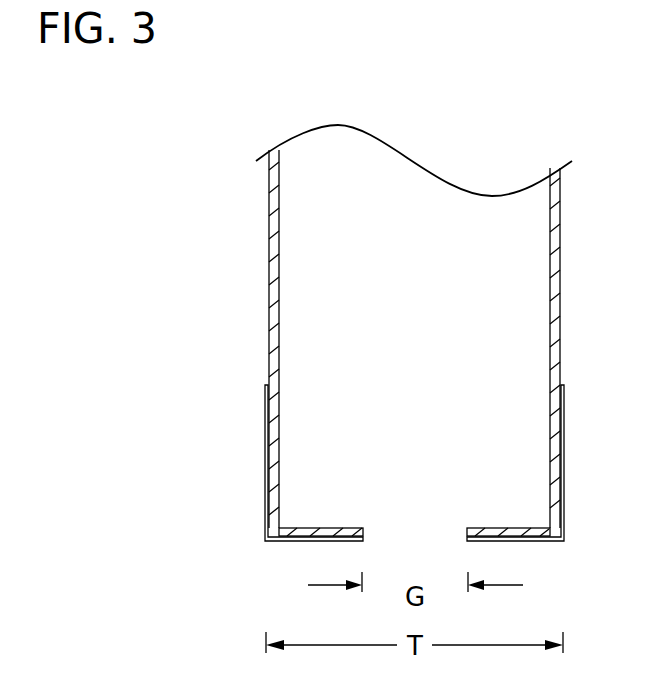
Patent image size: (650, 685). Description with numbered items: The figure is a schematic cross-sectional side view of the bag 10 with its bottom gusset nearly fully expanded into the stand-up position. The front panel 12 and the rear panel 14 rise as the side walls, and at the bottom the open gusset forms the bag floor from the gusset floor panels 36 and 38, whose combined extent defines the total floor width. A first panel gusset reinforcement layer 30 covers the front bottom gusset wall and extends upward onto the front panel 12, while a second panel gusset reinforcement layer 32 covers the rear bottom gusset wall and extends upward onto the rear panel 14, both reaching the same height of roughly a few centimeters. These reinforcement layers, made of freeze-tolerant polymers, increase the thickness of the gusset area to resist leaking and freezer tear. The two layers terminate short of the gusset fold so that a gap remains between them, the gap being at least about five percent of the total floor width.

The bag 10 is at (150, 329).
The front panel 12 is at (270, 230).
The rear panel 14 is at (560, 248).
The first panel gusset reinforcement layer 30 is at (265, 495).
The second panel gusset reinforcement layer 32 is at (565, 465).
The gusset floor panel 36 is at (337, 528).
The gusset floor panel 38 is at (492, 528).